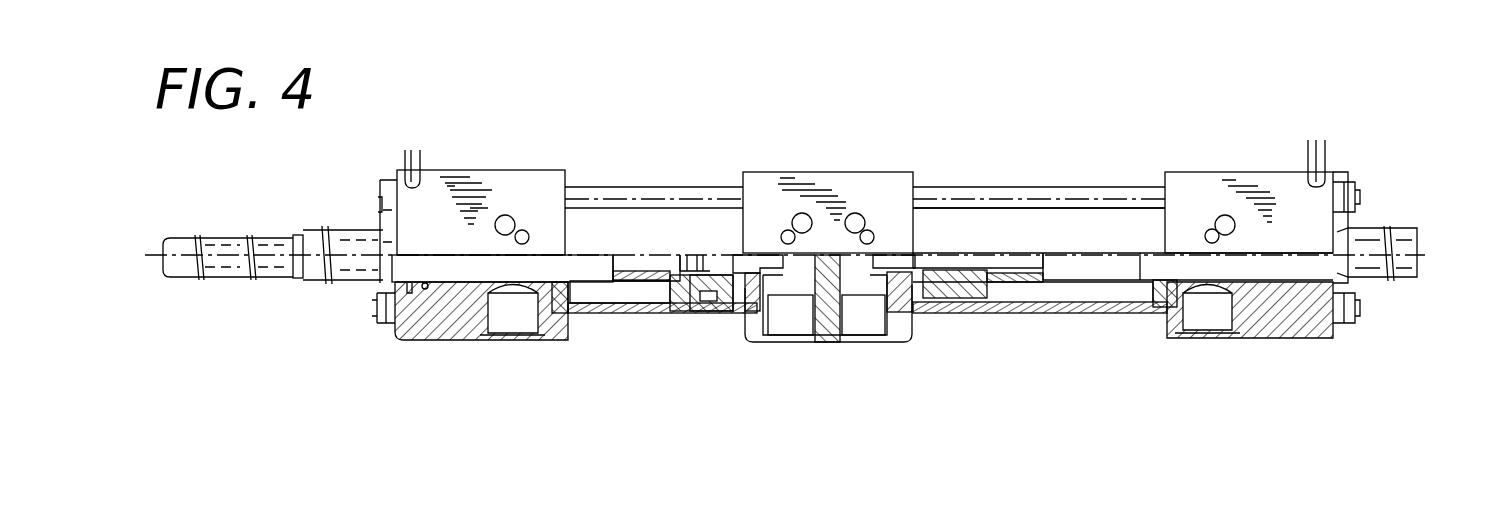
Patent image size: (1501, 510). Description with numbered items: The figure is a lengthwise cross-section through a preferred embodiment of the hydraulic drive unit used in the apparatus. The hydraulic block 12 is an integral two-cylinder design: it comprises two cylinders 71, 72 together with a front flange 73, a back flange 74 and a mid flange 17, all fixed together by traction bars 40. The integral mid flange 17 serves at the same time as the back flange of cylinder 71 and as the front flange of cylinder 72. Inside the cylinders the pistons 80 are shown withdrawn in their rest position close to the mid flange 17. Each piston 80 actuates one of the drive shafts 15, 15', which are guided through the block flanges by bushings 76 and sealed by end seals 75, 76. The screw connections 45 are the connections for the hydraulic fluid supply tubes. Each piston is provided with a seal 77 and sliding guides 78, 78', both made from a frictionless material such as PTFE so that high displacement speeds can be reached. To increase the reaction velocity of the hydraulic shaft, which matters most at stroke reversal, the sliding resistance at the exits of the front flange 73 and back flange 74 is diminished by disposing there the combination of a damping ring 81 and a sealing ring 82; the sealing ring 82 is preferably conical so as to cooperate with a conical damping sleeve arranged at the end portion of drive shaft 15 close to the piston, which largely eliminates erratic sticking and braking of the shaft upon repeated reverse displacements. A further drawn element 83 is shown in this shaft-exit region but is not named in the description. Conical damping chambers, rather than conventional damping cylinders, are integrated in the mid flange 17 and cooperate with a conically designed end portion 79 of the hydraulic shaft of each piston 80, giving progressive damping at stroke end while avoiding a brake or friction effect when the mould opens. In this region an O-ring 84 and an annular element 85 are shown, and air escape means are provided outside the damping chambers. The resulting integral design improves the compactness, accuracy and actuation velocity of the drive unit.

The hydraulic block 12 is at (955, 183).
The drive shaft 15 is at (273, 308).
The drive shaft 15' is at (1123, 318).
The mid flange 17 is at (828, 336).
The traction bars 40 is at (1133, 198).
The screw connections 45 is at (505, 214).
The cylinder 71 is at (617, 314).
The cylinder 72 is at (1080, 314).
The front flange 73 is at (473, 335).
The back flange 74 is at (1282, 326).
The end seal 75 is at (423, 290).
The bushing 76 is at (473, 285).
The seal 77 is at (968, 316).
The sliding guide 78 is at (1030, 335).
The sliding guide 78' is at (969, 337).
The conically designed end portion 79 is at (682, 306).
The piston 80 is at (714, 304).
The damping ring 81 is at (578, 314).
The sealing ring 82 is at (556, 304).
The flange 83 is at (645, 276).
The O-ring 84 is at (752, 312).
The annular element 85 is at (893, 314).